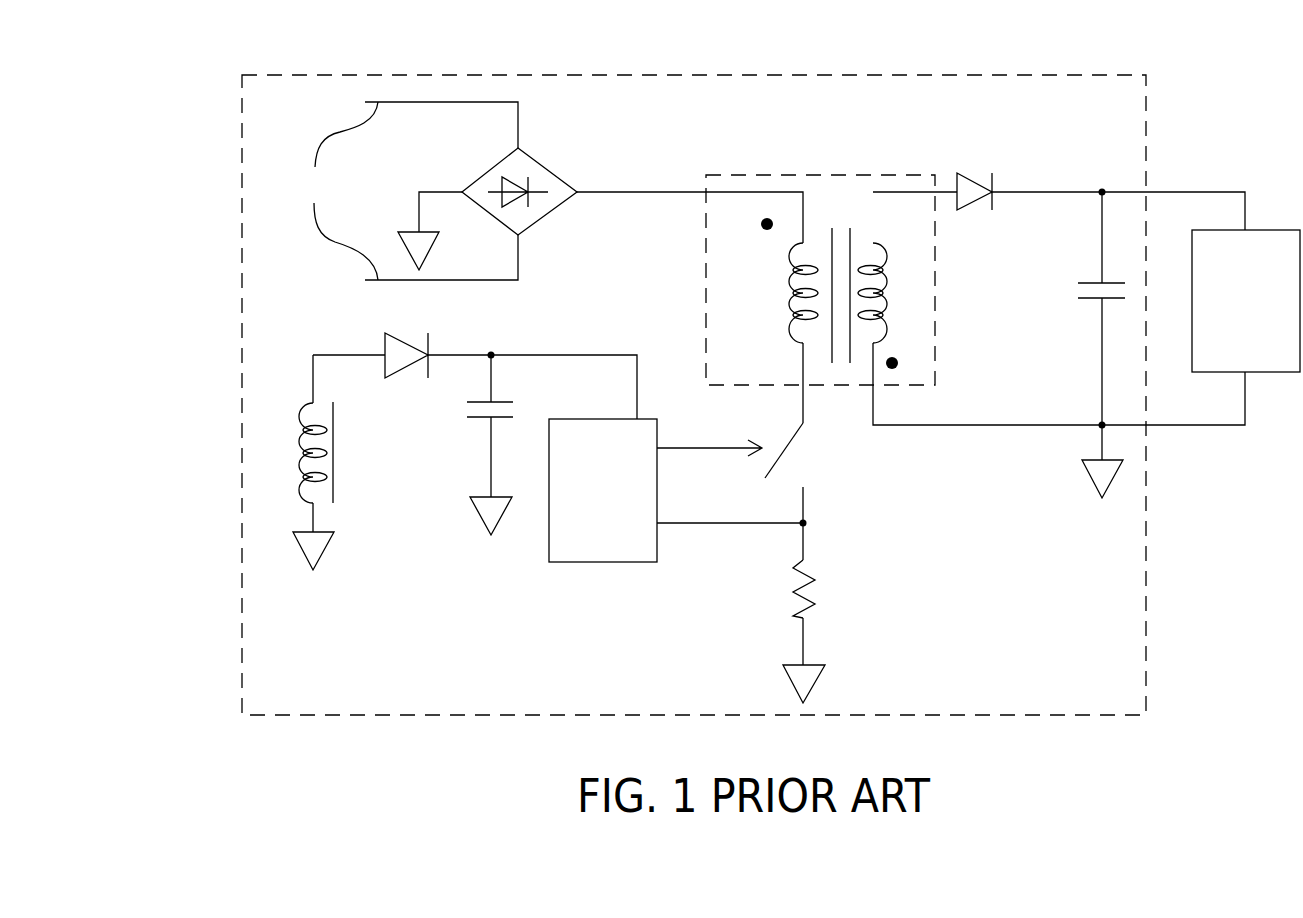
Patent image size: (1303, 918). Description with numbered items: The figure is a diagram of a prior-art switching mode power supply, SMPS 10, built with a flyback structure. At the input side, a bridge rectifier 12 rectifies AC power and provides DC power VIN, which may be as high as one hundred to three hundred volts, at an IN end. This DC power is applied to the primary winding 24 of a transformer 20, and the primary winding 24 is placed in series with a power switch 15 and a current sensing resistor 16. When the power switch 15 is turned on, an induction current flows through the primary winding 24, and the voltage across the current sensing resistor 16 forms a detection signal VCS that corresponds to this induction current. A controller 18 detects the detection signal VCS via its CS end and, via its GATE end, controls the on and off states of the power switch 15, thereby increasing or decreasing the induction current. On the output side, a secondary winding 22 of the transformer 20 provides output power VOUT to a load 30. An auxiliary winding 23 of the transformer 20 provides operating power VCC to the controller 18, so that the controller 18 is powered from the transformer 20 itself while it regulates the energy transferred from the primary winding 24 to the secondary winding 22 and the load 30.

The SMPS 10 is at (803, 75).
The bridge rectifier 12 is at (490, 168).
The power switch 15 is at (807, 468).
The current sensing resistor 16 is at (818, 607).
The controller 18 is at (603, 490).
The transformer 20 is at (803, 175).
The secondary winding 22 is at (887, 283).
The auxiliary winding 23 is at (298, 443).
The primary winding 24 is at (792, 303).
The load 30 is at (1246, 301).